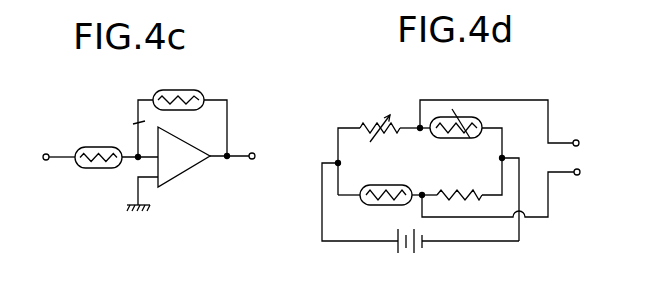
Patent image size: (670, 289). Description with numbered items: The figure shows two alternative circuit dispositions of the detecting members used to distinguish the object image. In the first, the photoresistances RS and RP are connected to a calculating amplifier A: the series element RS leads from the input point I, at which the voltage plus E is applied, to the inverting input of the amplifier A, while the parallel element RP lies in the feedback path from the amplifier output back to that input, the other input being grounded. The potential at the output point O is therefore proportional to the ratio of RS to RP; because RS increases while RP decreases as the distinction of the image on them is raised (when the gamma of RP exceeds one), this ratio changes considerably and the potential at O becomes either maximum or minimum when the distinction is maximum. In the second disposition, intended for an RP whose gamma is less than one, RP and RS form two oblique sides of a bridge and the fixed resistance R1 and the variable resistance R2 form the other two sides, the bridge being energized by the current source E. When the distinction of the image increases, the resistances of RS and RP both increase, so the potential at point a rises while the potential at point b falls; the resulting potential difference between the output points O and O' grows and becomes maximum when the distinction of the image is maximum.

In FIG. 4C, the input point I is at (51, 158).
In FIG. 4C, the series photoresistance RS is at (98, 144).
In FIG. 4D, the series photoresistance RS is at (456, 137).
In FIG. 4C, the parallel photoresistance RP is at (182, 111).
In FIG. 4D, the parallel photoresistance RP is at (380, 184).
In FIG. 4C, the calculating amplifier A is at (184, 157).
In FIG. 4C, the output point O is at (242, 158).
In FIG. 4D, the output point O is at (509, 128).
In FIG. 4D, the second output point O' is at (514, 190).
In FIG. 4D, the variable resistance R2 is at (380, 117).
In FIG. 4D, the fixed resistance R1 is at (452, 180).
In FIG. 4D, the point a is at (415, 136).
In FIG. 4D, the point b is at (421, 187).
In FIG. 4D, the current source E is at (420, 220).